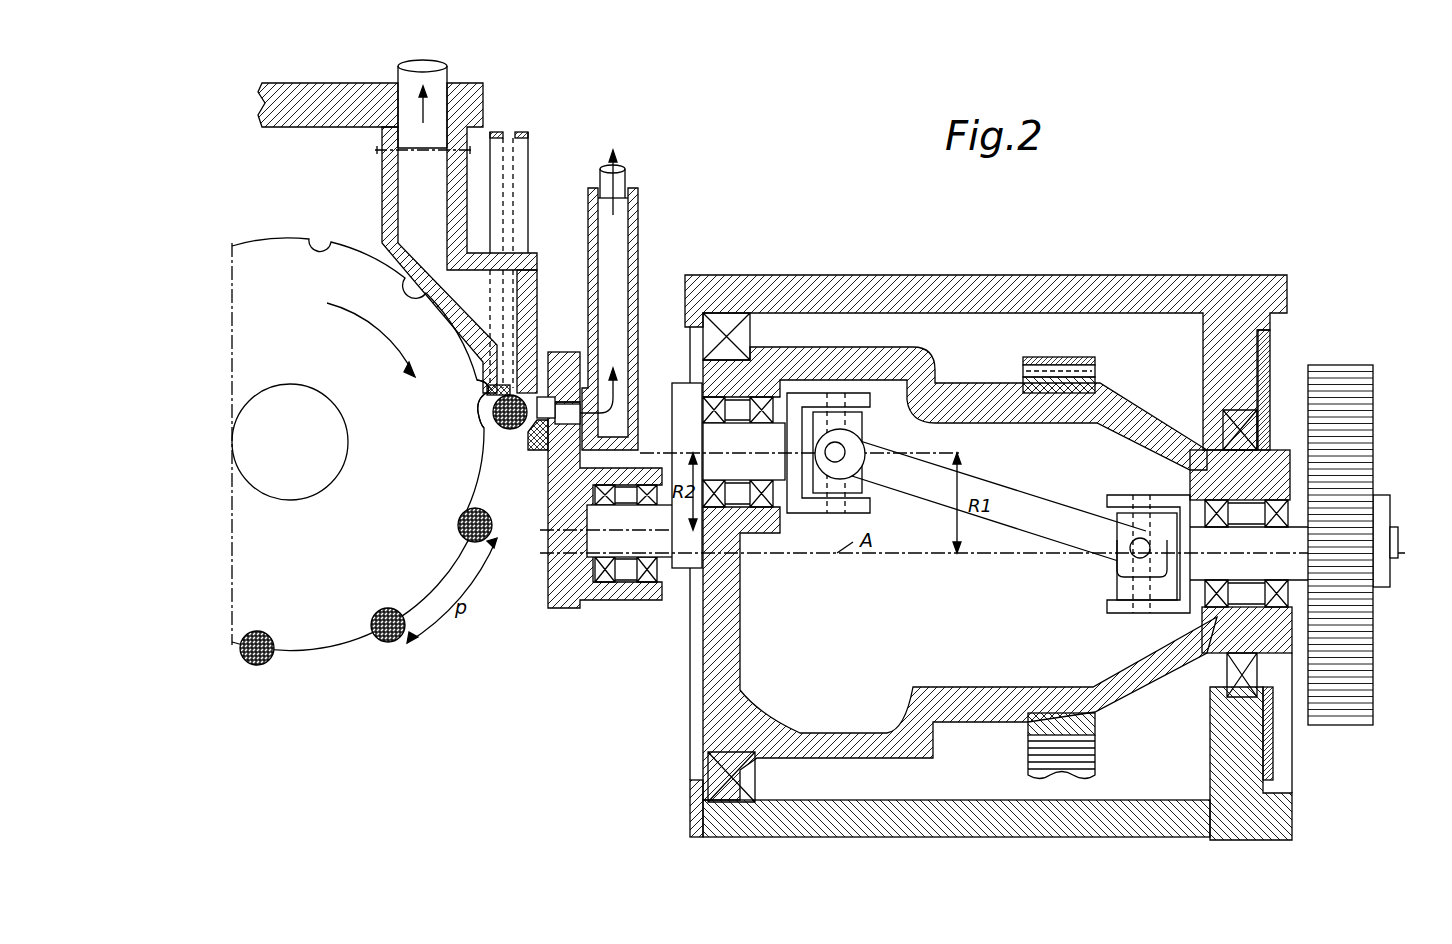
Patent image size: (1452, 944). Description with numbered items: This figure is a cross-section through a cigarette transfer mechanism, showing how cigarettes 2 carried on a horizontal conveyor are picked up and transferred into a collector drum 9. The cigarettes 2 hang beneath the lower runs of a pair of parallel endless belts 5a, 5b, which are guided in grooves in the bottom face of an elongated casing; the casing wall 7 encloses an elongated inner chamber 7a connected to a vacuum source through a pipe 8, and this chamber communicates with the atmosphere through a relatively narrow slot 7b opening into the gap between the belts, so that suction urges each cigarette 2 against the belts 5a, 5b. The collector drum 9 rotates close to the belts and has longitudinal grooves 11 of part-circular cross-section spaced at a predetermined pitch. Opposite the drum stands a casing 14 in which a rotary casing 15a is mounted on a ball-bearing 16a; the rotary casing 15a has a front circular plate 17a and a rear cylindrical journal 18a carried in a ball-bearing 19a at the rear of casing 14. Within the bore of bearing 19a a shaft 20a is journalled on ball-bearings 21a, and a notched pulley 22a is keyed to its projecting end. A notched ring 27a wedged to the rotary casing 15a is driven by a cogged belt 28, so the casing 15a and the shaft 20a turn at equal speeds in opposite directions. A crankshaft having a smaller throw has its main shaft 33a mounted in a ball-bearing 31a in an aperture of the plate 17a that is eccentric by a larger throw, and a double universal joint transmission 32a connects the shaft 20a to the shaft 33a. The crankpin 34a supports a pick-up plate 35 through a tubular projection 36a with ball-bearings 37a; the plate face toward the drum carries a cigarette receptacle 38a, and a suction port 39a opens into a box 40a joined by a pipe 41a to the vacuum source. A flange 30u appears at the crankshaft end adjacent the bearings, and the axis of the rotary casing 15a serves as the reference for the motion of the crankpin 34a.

The cigarettes 2 is at (513, 420).
The endless belt 5a is at (530, 372).
The endless belt 5b is at (492, 397).
The feed tube wall 7 is at (527, 277).
The inner chamber 7a is at (505, 260).
The slot 7b is at (508, 390).
The pipe 8 is at (437, 83).
The collector drum 9 is at (343, 636).
The longitudinal grooves 11 is at (423, 302).
The casing 14 is at (1033, 287).
The casing 15a is at (918, 378).
The ball-bearing 16a is at (723, 318).
The circular plate 17a is at (720, 638).
The cylindrical journal portion 18a is at (1279, 645).
The ball-bearing 19a is at (1247, 437).
The shaft 20a is at (1294, 541).
The ball-bearings 21a is at (1217, 600).
The notched pulley 22a is at (1355, 703).
The notched ring 27a is at (1097, 387).
The cogged belt 28 is at (1072, 767).
The flange 30u is at (683, 572).
The ball-bearing 31a is at (760, 407).
The double universal joint transmission 32a is at (1000, 485).
The shaft of crankshaft 33a is at (800, 451).
The crankpin 34a is at (580, 543).
The pick-up plate 35 is at (556, 607).
The tubular projection 36a is at (620, 531).
The ball-bearings 37a is at (640, 577).
The cigarette-receiving receptacle 38a is at (540, 450).
The suction port 39a is at (563, 422).
The box 40a is at (613, 283).
The pipe 41a is at (618, 184).